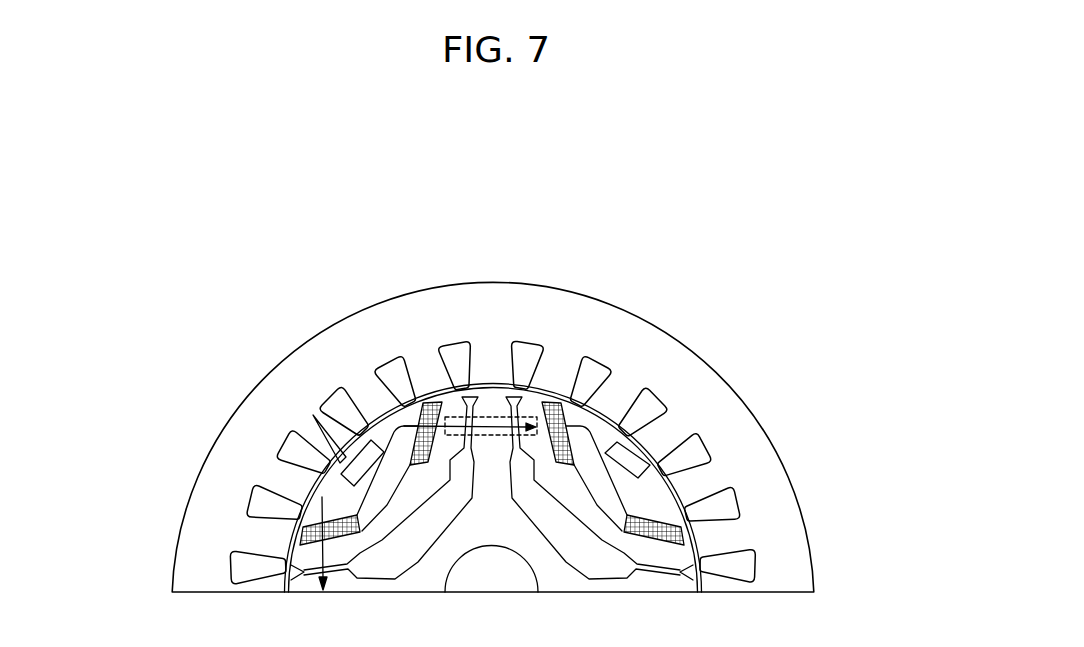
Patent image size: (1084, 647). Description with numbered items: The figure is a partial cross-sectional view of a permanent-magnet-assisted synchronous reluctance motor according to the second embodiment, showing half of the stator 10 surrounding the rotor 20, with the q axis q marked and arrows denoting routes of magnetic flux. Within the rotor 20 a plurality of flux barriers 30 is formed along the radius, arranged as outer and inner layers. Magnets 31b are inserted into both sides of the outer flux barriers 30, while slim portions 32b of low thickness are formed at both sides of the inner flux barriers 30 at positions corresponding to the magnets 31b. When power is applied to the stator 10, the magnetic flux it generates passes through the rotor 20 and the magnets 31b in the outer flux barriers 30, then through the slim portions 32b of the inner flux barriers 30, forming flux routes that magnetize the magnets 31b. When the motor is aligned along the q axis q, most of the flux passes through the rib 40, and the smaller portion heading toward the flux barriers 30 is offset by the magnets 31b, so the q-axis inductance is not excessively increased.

The stator 10 is at (207, 541).
The rotor 20 is at (560, 573).
The flux barriers 30 is at (594, 383).
The magnets 31b is at (556, 398).
The slim portions 32b is at (495, 405).
The rib 40 is at (545, 400).
The q axis q is at (298, 398).